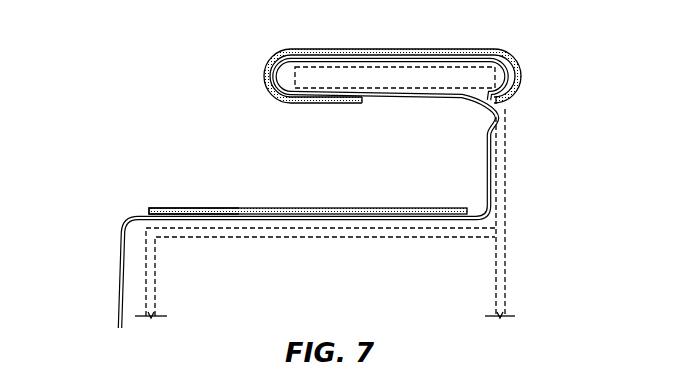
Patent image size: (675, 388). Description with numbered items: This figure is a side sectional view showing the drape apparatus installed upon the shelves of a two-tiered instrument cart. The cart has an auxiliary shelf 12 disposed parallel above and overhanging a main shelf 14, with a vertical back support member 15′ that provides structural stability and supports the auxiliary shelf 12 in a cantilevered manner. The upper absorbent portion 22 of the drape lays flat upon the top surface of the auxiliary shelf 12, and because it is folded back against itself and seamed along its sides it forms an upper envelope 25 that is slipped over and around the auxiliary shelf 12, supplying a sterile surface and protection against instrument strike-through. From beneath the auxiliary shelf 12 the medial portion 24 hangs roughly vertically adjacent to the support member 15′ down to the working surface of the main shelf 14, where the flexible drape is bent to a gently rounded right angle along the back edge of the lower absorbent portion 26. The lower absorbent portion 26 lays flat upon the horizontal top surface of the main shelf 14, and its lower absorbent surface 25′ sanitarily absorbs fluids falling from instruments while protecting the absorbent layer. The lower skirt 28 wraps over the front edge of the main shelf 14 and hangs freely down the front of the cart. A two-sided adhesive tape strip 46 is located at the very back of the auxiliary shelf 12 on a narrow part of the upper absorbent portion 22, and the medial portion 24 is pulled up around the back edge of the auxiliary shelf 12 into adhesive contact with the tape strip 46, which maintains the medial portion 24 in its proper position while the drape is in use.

The auxiliary shelf 12 is at (340, 72).
The main shelf 14 is at (383, 238).
The vertical back support member 15′ is at (505, 172).
The upper absorbent portion 22 is at (403, 49).
The medial portion 24 is at (487, 147).
The upper envelope 25 is at (264, 74).
The lower absorbent surface 25′ is at (178, 208).
The lower absorbent portion 26 is at (283, 209).
The lower skirt 28 is at (121, 279).
The two-sided adhesive tape strip 46 is at (513, 108).